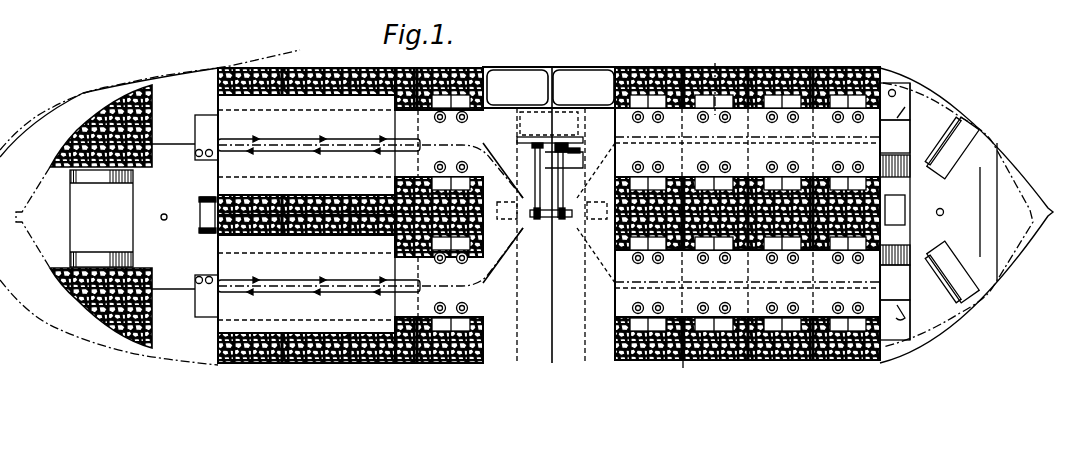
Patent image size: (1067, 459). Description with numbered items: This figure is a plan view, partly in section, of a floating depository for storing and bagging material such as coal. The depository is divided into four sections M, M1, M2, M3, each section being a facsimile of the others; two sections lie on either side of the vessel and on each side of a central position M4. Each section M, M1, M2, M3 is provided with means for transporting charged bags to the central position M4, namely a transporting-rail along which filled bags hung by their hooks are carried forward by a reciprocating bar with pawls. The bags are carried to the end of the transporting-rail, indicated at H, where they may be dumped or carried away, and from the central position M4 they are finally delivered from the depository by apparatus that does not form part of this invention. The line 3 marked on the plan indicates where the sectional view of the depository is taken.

The section of the floating depository M is at (487, 63).
The section of the floating depository M1 is at (880, 67).
The section of the floating depository M2 is at (887, 343).
The section of the floating depository M3 is at (218, 365).
The central position M4 is at (610, 63).
The end of the transporting-rail H is at (598, 118).
The section line 3 3 is at (712, 61).